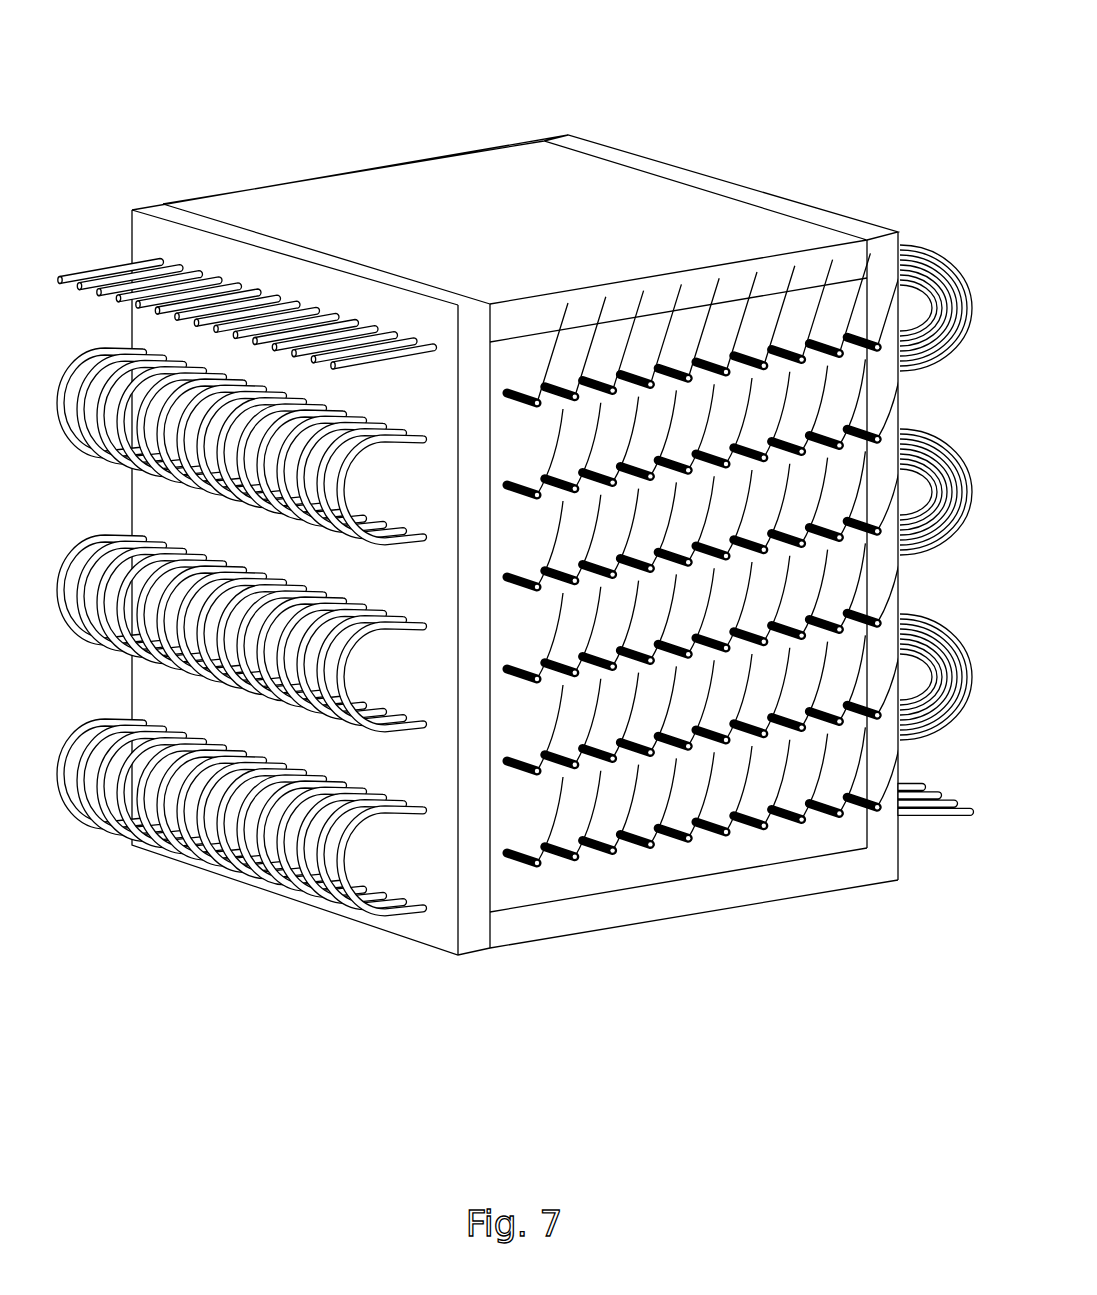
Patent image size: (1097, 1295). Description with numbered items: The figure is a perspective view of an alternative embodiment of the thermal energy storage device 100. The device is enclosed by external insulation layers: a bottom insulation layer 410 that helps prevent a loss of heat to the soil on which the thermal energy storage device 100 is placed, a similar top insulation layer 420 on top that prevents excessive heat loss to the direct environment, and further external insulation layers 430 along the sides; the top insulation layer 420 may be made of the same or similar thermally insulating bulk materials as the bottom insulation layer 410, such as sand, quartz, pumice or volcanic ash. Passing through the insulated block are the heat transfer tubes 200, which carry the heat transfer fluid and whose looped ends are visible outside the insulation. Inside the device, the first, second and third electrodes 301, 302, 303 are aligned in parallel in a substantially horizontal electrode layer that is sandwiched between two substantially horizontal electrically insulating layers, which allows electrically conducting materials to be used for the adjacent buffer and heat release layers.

The thermal energy storage device 100 is at (515, 533).
The heat transfer tube 200 is at (955, 267).
The first electrode 301 is at (637, 845).
The second electrode 302 is at (678, 838).
The third electrode 303 is at (717, 833).
The bottom insulation layer 410 is at (583, 913).
The top insulation layer 420 is at (323, 198).
The external insulation layer 430 is at (468, 935).